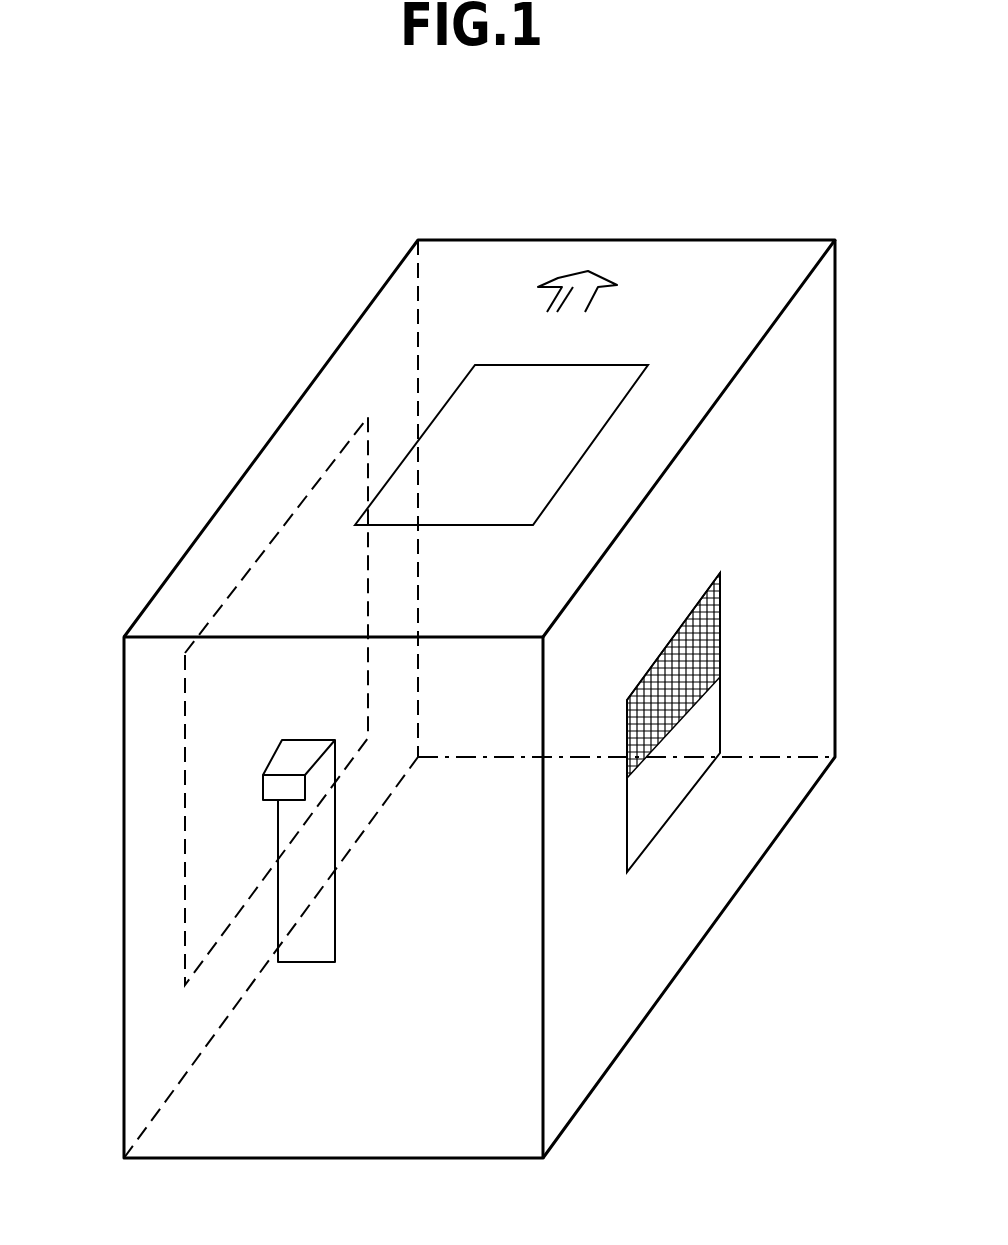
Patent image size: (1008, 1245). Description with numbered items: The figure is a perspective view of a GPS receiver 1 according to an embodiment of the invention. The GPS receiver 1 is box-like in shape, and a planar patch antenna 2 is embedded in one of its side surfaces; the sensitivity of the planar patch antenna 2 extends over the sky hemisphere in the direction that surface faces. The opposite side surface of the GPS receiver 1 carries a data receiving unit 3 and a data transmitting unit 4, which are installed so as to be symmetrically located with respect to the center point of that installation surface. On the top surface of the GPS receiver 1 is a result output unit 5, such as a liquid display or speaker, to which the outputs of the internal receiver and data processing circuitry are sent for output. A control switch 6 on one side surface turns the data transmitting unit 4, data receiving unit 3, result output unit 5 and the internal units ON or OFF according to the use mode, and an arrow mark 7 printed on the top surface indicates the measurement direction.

The GPS receiver 1 is at (817, 388).
The planar patch antenna 2 is at (247, 617).
The data receiving unit 3 is at (703, 715).
The data transmitting unit 4 is at (720, 640).
The result output unit 5 is at (453, 433).
The control switch 6 is at (263, 782).
The arrow (mark) 7 is at (573, 278).